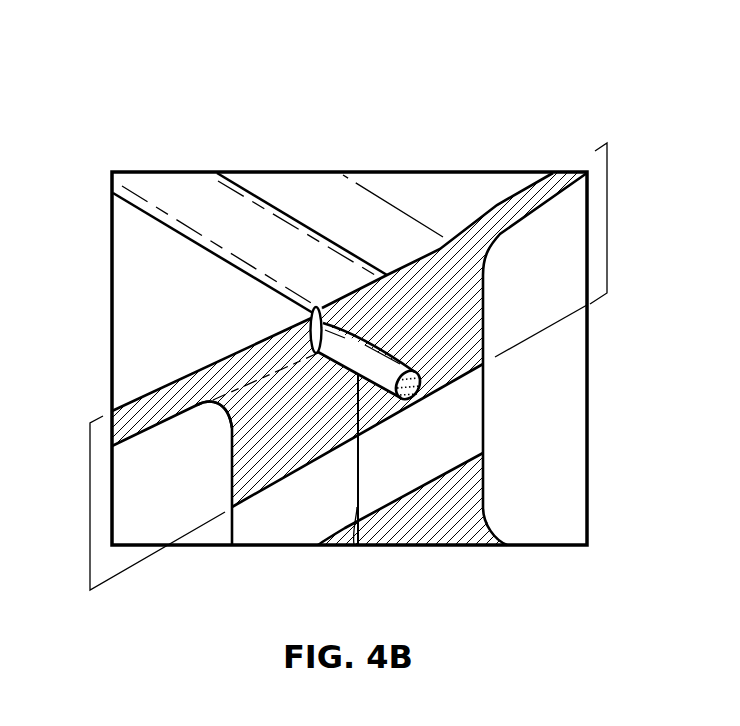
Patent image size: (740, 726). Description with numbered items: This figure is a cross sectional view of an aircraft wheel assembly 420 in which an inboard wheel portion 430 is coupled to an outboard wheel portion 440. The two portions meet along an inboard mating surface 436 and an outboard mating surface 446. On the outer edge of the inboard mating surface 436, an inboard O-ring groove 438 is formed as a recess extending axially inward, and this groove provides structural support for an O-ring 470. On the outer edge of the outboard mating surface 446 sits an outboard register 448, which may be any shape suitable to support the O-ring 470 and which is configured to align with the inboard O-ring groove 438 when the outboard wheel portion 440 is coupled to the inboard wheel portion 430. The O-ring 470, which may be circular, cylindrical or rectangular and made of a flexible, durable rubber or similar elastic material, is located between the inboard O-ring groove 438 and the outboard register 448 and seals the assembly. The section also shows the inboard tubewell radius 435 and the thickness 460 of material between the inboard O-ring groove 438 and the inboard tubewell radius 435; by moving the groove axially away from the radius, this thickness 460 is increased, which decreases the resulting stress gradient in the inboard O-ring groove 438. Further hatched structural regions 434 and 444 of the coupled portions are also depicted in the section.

The aircraft wheel assembly 420 is at (138, 110).
The inboard wheel portion 430 is at (88, 510).
The outboard wheel portion 440 is at (607, 236).
The hatched core section 434 is at (243, 363).
The inboard tubewell radius 435 is at (203, 400).
The inboard O-ring groove 438 is at (317, 313).
The outboard register 448 is at (332, 318).
The O-ring 470 is at (360, 343).
The wall 444 is at (472, 247).
The thickness 460 is at (255, 400).
The inboard mating surface 436 is at (318, 544).
The outboard mating surface 446 is at (360, 493).